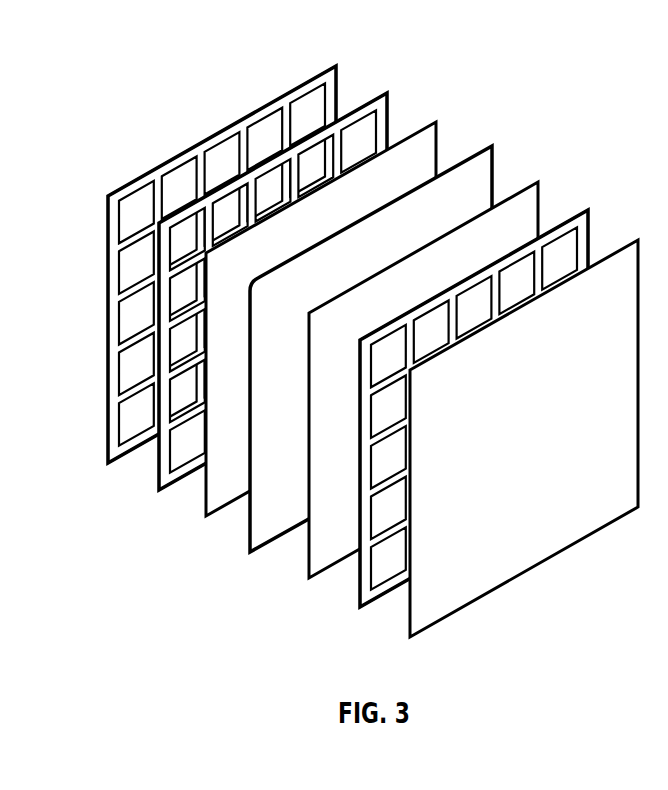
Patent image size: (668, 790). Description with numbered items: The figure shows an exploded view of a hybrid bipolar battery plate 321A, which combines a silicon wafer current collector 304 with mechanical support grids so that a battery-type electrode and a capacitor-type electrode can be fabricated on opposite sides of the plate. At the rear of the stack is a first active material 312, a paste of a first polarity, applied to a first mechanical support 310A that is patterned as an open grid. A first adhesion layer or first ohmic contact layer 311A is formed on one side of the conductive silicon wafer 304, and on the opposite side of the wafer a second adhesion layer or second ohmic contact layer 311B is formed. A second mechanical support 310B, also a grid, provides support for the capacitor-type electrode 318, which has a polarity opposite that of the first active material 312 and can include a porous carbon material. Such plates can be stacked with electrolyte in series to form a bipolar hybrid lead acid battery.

The hybrid bipolar battery plate 321A is at (142, 130).
The first active material 312 is at (108, 454).
The first mechanical support 310A is at (158, 484).
The first adhesion layer or first ohmic contact layer 311A is at (208, 512).
The silicon wafer current collector 304 is at (252, 542).
The second adhesion layer or second ohmic contact layer 311B is at (309, 568).
The second mechanical support 310B is at (359, 597).
The capacitor-type electrode 318 is at (408, 627).